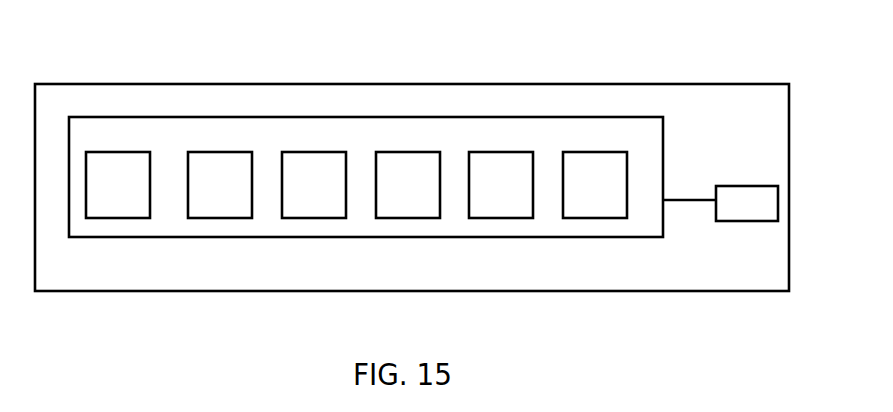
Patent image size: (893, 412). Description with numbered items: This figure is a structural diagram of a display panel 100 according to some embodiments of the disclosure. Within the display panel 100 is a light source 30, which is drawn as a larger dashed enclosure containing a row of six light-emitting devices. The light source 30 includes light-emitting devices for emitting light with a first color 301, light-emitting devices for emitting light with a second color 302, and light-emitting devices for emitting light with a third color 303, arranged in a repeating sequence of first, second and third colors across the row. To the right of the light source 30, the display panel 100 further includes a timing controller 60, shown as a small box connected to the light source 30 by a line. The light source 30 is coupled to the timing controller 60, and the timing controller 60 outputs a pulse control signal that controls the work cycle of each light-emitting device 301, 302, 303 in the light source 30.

The display panel 100 is at (52, 84).
The light source 30 is at (177, 117).
The light-emitting device for emitting light with a first color 301 is at (117, 152).
The light-emitting device for emitting light with a second color 302 is at (210, 152).
The light-emitting device for emitting light with a third color 303 is at (310, 152).
The timing controller 60 is at (743, 186).